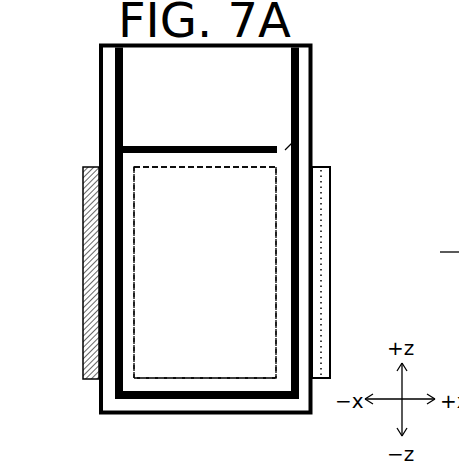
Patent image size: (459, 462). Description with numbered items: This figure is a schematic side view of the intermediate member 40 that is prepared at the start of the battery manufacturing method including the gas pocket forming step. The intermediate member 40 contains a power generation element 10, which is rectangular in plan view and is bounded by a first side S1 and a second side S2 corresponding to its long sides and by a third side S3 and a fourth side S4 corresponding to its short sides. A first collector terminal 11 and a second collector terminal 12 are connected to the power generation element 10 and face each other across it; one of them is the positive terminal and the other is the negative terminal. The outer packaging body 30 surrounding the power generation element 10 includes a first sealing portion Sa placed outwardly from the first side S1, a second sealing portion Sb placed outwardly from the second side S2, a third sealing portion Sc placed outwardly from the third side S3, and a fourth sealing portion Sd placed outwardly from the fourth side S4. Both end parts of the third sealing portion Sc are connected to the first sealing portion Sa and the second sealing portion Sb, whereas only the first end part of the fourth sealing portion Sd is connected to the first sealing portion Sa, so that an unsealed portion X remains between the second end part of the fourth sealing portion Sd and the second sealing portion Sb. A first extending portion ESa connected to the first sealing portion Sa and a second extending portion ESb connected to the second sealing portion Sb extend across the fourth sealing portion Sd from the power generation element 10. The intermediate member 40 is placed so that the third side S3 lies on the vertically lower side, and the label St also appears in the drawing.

The intermediate member 40 is at (243, 231).
The outer packaging body 30 is at (306, 150).
The power generation element 10 is at (263, 309).
The first collector terminal 11 is at (83, 345).
The second collector terminal 12 is at (322, 339).
The first side S1 is at (135, 263).
The second side S2 is at (277, 263).
The third side S3 is at (255, 380).
The fourth side S4 is at (143, 167).
The first sealing portion Sa is at (123, 222).
The second sealing portion Sb is at (299, 218).
The third sealing portion Sc is at (193, 400).
The fourth sealing portion Sd is at (153, 145).
The first extending portion ESa is at (123, 100).
The second extending portion ESb is at (299, 90).
The unsealed portion X is at (297, 137).
The thickness of layer St is at (458, 232).